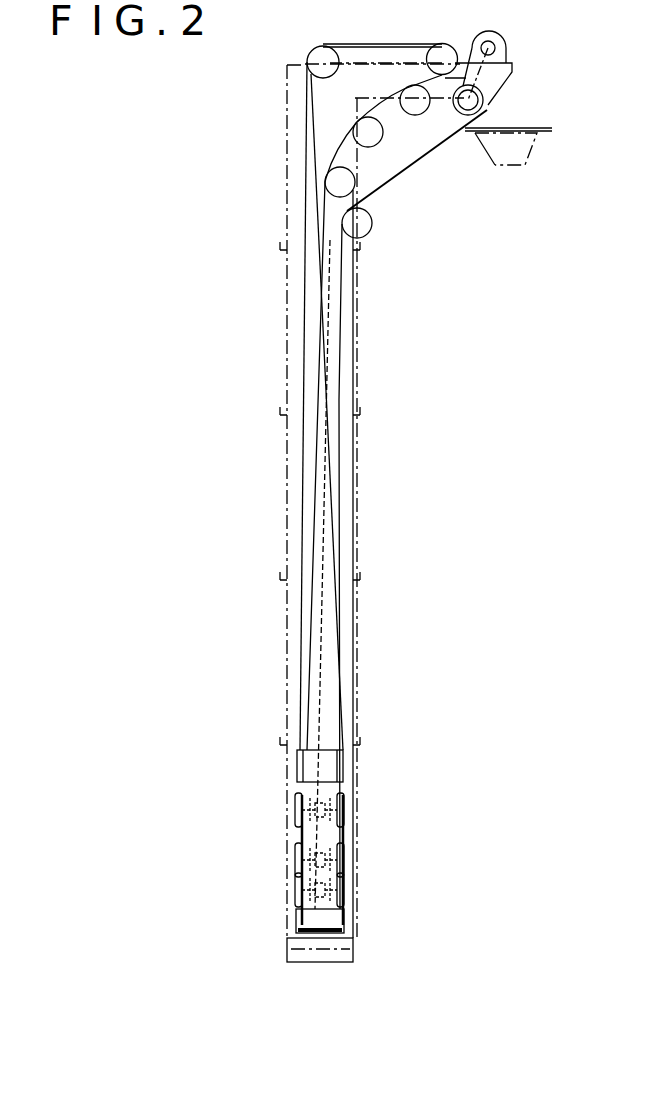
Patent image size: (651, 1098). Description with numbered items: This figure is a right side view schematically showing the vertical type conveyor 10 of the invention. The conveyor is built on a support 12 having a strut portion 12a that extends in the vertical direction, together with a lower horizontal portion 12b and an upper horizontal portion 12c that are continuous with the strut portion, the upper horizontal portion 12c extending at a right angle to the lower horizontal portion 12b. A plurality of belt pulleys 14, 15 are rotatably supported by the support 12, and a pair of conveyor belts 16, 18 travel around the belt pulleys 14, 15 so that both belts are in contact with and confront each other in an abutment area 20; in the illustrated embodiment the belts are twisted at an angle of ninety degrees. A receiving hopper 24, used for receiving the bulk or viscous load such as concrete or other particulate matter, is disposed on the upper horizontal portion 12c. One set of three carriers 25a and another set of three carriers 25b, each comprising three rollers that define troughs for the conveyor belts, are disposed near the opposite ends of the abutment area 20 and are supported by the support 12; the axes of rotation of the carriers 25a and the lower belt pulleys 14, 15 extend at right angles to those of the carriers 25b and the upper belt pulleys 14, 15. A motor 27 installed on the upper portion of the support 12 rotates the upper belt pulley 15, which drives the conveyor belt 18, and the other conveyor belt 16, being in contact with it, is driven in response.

The vertical type conveyor 10 is at (258, 124).
The support 12 is at (357, 351).
The strut portion 12a is at (358, 384).
The lower horizontal portion 12b is at (300, 960).
The upper horizontal portion 12c is at (372, 62).
The belt pulleys 14 is at (314, 48).
The belt pulleys 15 is at (485, 104).
The conveyor belt 16 is at (304, 332).
The conveyor belt 18 is at (340, 608).
The abutment area 20 is at (330, 303).
The receiving hopper 24 is at (538, 140).
The carriers 25a is at (345, 808).
The carriers 25b is at (428, 112).
The motor 27 is at (500, 45).